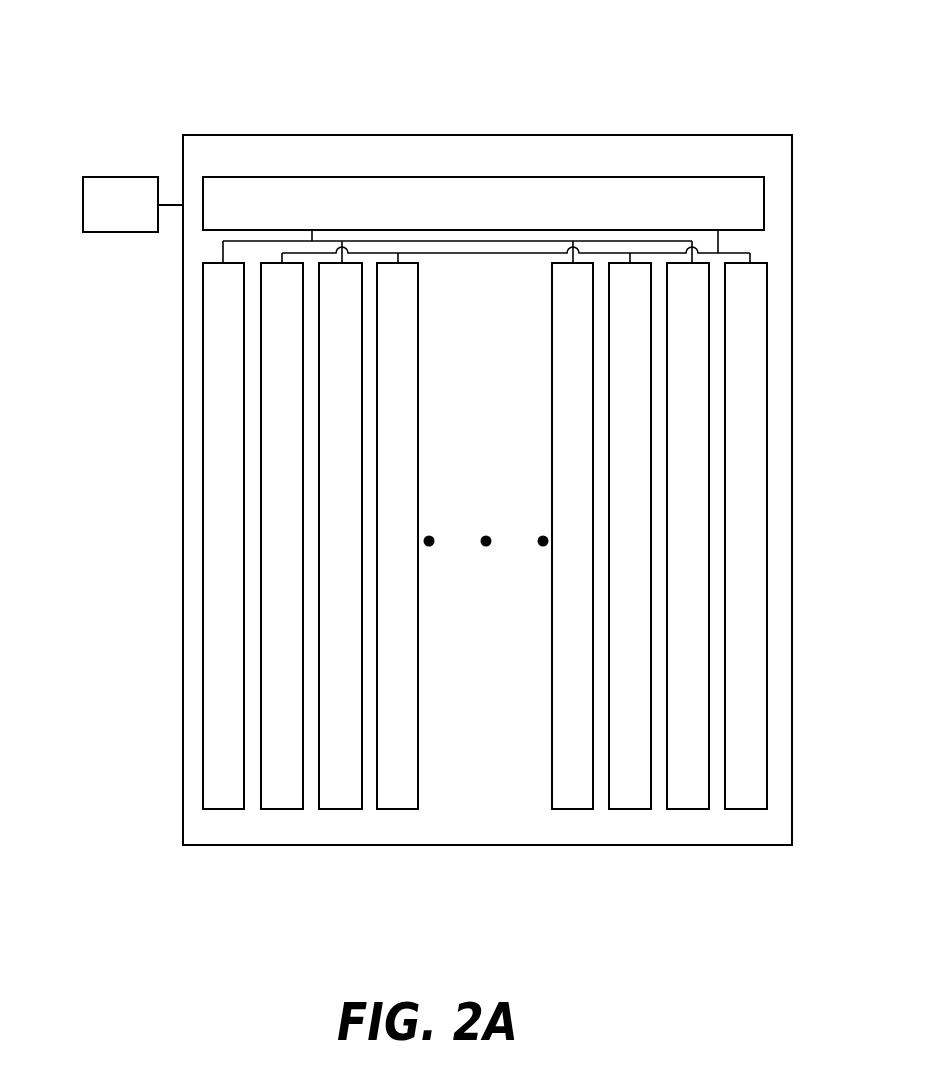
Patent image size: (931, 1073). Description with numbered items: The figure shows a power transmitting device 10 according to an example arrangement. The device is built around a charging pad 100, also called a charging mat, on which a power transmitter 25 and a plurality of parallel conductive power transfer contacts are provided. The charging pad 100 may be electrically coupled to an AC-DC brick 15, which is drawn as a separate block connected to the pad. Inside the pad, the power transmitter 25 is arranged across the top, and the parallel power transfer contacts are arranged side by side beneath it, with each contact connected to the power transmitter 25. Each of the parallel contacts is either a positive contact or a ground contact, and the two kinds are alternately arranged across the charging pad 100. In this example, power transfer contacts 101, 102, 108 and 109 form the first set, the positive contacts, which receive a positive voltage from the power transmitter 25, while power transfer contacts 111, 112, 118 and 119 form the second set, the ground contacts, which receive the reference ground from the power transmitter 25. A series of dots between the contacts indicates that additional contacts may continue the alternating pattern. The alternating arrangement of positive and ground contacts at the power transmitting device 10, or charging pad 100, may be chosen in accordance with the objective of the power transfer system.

The power transmitting device 10 is at (144, 68).
The AC-DC brick 15 is at (123, 176).
The power transmitter 25 is at (297, 176).
The charging pad 100 is at (720, 134).
The power transfer contact 101 is at (225, 809).
The power transfer contact 102 is at (342, 809).
The power transfer contact 108 is at (573, 809).
The power transfer contact 109 is at (688, 809).
The power transfer contact 111 is at (284, 809).
The power transfer contact 112 is at (400, 809).
The power transfer contact 118 is at (631, 809).
The power transfer contact 119 is at (747, 809).